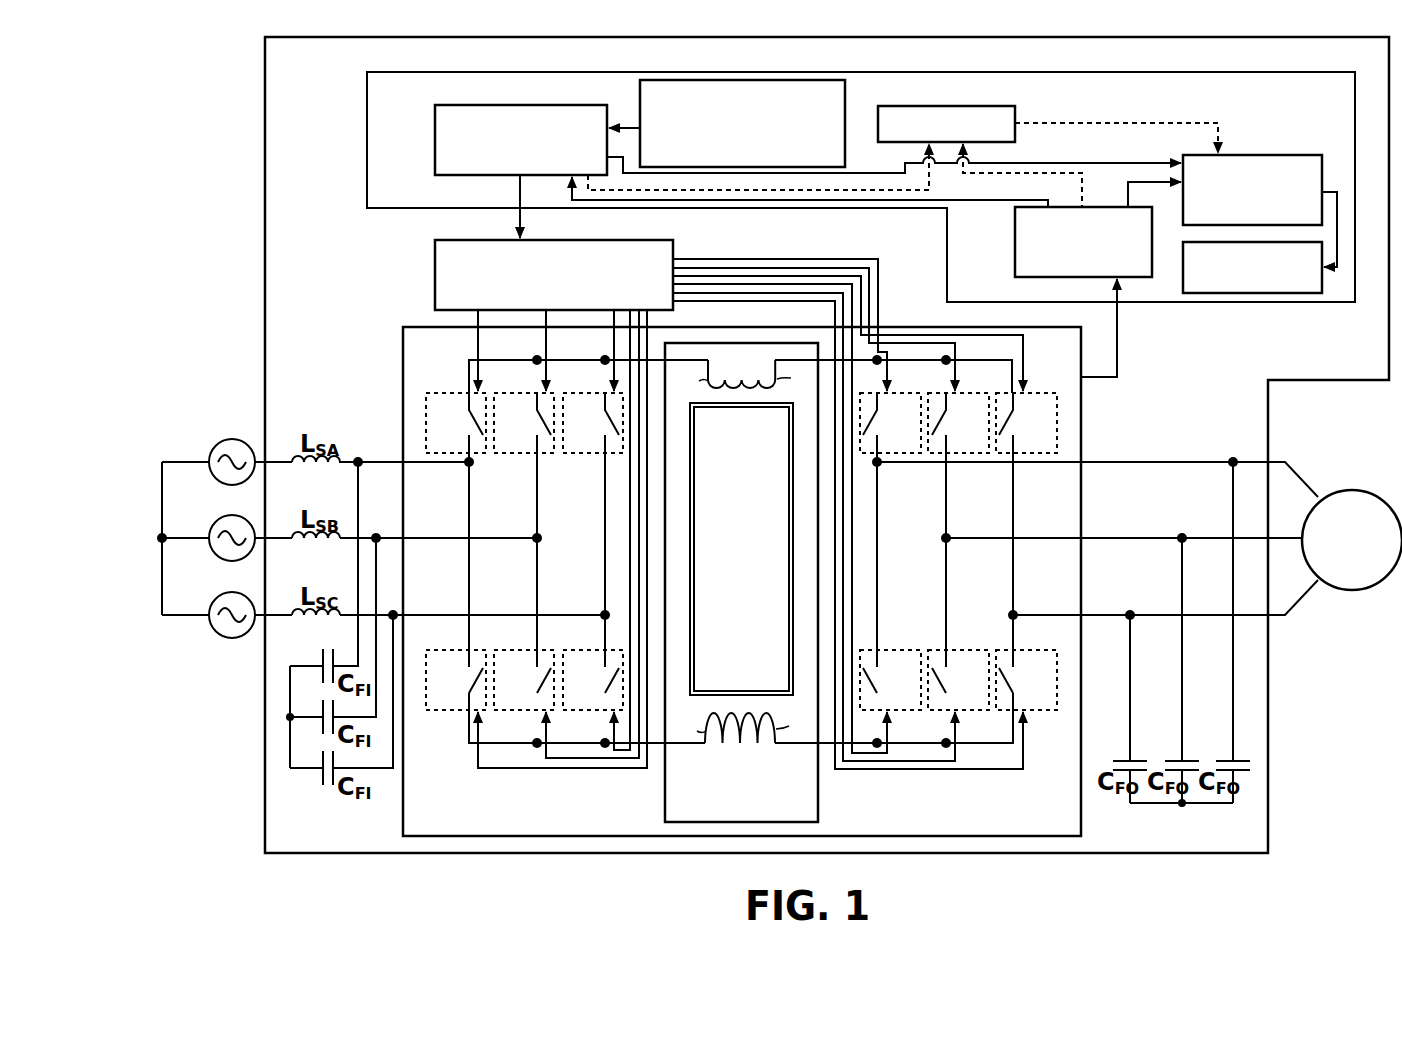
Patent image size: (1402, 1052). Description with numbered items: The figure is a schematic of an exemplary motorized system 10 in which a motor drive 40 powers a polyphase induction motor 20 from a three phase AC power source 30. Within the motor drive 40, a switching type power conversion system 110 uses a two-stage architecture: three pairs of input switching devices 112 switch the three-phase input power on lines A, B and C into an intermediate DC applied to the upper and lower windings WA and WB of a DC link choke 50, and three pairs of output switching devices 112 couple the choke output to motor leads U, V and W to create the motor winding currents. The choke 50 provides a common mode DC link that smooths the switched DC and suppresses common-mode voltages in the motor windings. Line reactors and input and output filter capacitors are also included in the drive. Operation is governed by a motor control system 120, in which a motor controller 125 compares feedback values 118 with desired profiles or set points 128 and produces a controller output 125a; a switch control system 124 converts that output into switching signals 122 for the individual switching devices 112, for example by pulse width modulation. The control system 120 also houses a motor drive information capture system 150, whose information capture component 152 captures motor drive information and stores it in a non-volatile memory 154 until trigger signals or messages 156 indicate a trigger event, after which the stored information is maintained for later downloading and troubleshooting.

The motorized system 10 is at (190, 155).
The polyphase induction motor 20 is at (1352, 540).
The three phase AC power source 30 is at (222, 655).
The motor drive 40 is at (265, 62).
The DC link choke 50 is at (741, 582).
The switching type power conversion system 110 is at (401, 810).
The switching devices 112 is at (741, 551).
The feedback values 118 is at (876, 277).
The motor control system 120 is at (1281, 72).
The switching signals 122 is at (830, 254).
The switch control system 124 is at (554, 504).
The motor controller 125 is at (435, 141).
The controller output 125a is at (518, 233).
The desired profiles or set points 128 is at (640, 97).
The motor drive information capture system 150 is at (1303, 323).
The information capture component 152 is at (1258, 155).
The non-volatile memory 154 is at (1265, 293).
The trigger signals or messages 156 is at (956, 106).